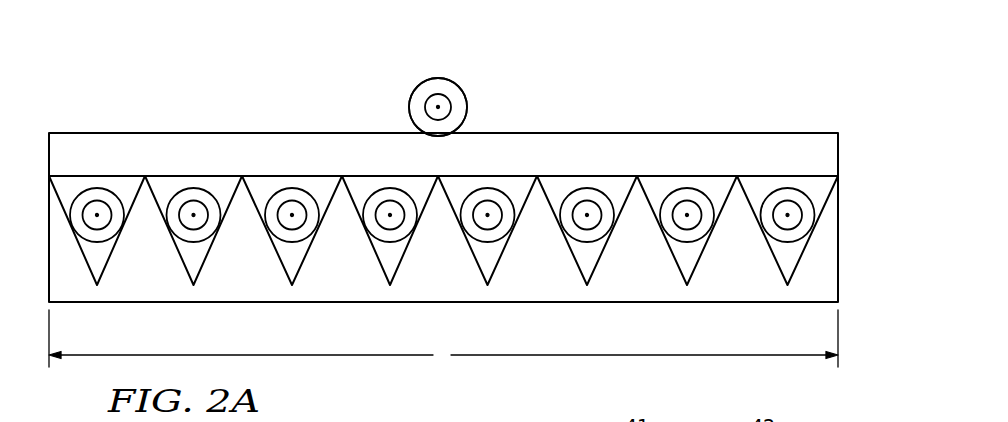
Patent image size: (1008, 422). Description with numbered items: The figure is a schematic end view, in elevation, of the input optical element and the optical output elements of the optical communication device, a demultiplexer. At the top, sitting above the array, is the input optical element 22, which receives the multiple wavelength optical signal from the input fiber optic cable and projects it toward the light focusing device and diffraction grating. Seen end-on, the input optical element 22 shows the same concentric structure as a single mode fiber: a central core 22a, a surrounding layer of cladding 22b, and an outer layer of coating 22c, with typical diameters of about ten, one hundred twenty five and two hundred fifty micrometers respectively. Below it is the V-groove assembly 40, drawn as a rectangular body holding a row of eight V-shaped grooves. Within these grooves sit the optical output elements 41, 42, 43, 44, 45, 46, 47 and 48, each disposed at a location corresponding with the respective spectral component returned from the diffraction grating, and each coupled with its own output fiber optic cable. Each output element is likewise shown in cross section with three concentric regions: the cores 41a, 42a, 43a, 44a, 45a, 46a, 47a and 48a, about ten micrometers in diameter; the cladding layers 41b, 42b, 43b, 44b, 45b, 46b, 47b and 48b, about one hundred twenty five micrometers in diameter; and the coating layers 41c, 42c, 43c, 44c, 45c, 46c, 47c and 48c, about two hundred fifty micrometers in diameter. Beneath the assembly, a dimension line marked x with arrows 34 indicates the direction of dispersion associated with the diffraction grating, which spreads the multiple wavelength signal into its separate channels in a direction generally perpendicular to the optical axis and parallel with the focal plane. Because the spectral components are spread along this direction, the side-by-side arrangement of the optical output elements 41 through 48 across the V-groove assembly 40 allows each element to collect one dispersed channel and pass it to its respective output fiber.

The input optical element 22 is at (454, 77).
The core 22a is at (441, 94).
The layer of cladding 22b is at (413, 92).
The layer of coating 22c is at (466, 99).
The arrows 34 is at (538, 358).
The V-groove assembly 40 is at (847, 245).
The optical output element 41 is at (97, 217).
The core 41a is at (106, 186).
The cladding layer 41b is at (87, 239).
The coating layer 41c is at (97, 257).
The optical output element 42 is at (193, 217).
The core 42a is at (202, 186).
The cladding layer 42b is at (183, 239).
The coating layer 42c is at (193, 257).
The optical output element 43 is at (292, 217).
The core 43a is at (301, 186).
The cladding layer 43b is at (282, 239).
The coating layer 43c is at (292, 257).
The optical output element 44 is at (390, 217).
The core 44a is at (399, 186).
The cladding layer 44b is at (380, 239).
The coating layer 44c is at (390, 257).
The optical output element 45 is at (487, 217).
The core 45a is at (478, 186).
The cladding layer 45b is at (498, 239).
The coating layer 45c is at (487, 257).
The optical output element 46 is at (587, 217).
The core 46a is at (577, 186).
The cladding layer 46b is at (597, 239).
The coating layer 46c is at (587, 257).
The optical output element 47 is at (687, 217).
The core 47a is at (677, 186).
The cladding layer 47b is at (697, 239).
The coating layer 47c is at (687, 257).
The optical output element 48 is at (787, 217).
The core 48a is at (778, 186).
The cladding layer 48b is at (798, 239).
The coating layer 48c is at (787, 257).